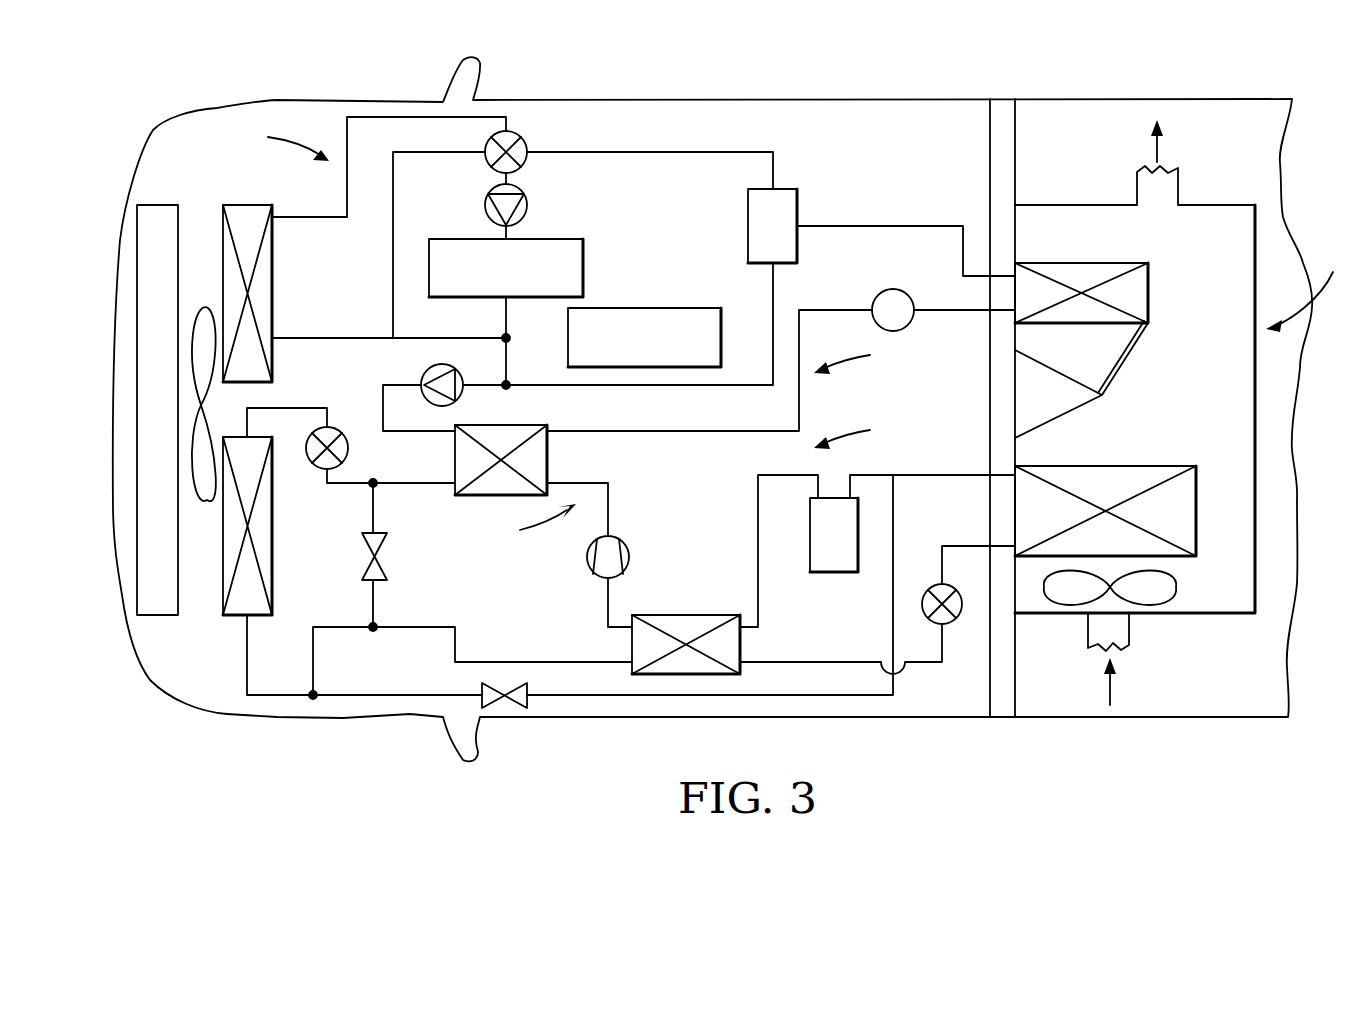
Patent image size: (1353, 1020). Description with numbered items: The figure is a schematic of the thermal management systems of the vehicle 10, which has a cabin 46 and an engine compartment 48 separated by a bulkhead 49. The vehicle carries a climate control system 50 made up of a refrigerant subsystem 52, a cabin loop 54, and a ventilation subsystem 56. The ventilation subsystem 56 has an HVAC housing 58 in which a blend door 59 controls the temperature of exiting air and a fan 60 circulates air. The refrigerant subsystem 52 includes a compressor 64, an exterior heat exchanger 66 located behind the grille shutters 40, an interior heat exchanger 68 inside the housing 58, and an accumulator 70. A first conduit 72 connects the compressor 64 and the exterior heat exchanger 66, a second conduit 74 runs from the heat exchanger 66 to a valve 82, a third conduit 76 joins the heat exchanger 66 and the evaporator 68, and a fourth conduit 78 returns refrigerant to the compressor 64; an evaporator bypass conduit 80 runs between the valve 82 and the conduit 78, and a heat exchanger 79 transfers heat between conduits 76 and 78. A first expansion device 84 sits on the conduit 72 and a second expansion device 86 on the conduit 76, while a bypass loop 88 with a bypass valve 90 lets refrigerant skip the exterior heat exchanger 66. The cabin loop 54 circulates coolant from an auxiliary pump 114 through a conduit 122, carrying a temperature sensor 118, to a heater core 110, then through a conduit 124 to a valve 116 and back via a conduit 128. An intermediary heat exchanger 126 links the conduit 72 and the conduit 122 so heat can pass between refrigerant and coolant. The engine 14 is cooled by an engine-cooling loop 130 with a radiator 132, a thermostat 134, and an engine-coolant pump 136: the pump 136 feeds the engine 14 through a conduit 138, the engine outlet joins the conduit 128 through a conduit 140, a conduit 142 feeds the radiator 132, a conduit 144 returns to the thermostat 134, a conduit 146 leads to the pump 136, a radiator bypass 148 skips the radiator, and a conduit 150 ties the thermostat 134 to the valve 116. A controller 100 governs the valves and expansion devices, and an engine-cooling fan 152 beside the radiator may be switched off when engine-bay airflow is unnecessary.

The vehicle 10 is at (277, 100).
The engine 14 is at (548, 239).
The grille shutters 40 is at (157, 410).
The cabin 46 is at (1275, 394).
The engine compartment 48 is at (944, 125).
The bulkhead 49 is at (1003, 104).
The climate control system 50 is at (914, 458).
The refrigerant subsystem 52 is at (531, 523).
The cabin loop 54 is at (860, 358).
The ventilation subsystem 56 is at (1307, 291).
The HVAC housing 58 is at (1257, 265).
The blend door 59 is at (1132, 360).
The fan 60 is at (1178, 585).
The compressor 64 is at (630, 557).
The exterior heat exchanger 66 is at (272, 528).
The interior heat exchanger 68 is at (1105, 466).
The accumulator 70 is at (834, 535).
The first conduit 72 is at (573, 483).
The second conduit 74 is at (357, 695).
The third conduit 76 is at (415, 627).
The fourth conduit 78 is at (758, 522).
The heat exchanger 79 is at (668, 615).
The evaporator bypass conduit 80 is at (778, 695).
The valve 82 is at (497, 705).
The first expansion device 84 is at (343, 432).
The second expansion device 86 is at (950, 625).
The bypass loop 88 is at (375, 505).
The bypass valve 90 is at (362, 550).
The controller 100 is at (646, 308).
The heater core 110 is at (1085, 263).
The auxiliary pump 114 is at (430, 368).
The valve 116 is at (785, 189).
The temperature sensor 118 is at (890, 290).
The conduit 122 is at (665, 432).
The conduit 124 is at (873, 226).
The intermediary heat exchanger 126 is at (505, 425).
The conduit 128 is at (590, 386).
The engine-cooling loop 130 is at (274, 143).
The radiator 132 is at (247, 205).
The thermostat 134 is at (527, 137).
The engine-coolant pump 136 is at (525, 190).
The conduit 138 is at (502, 234).
The conduit 140 is at (509, 325).
The conduit 142 is at (410, 338).
The conduit 144 is at (383, 118).
The conduit 146 is at (503, 180).
The radiator bypass 148 is at (393, 288).
The conduit 150 is at (655, 152).
The engine-cooling fan 152 is at (199, 500).